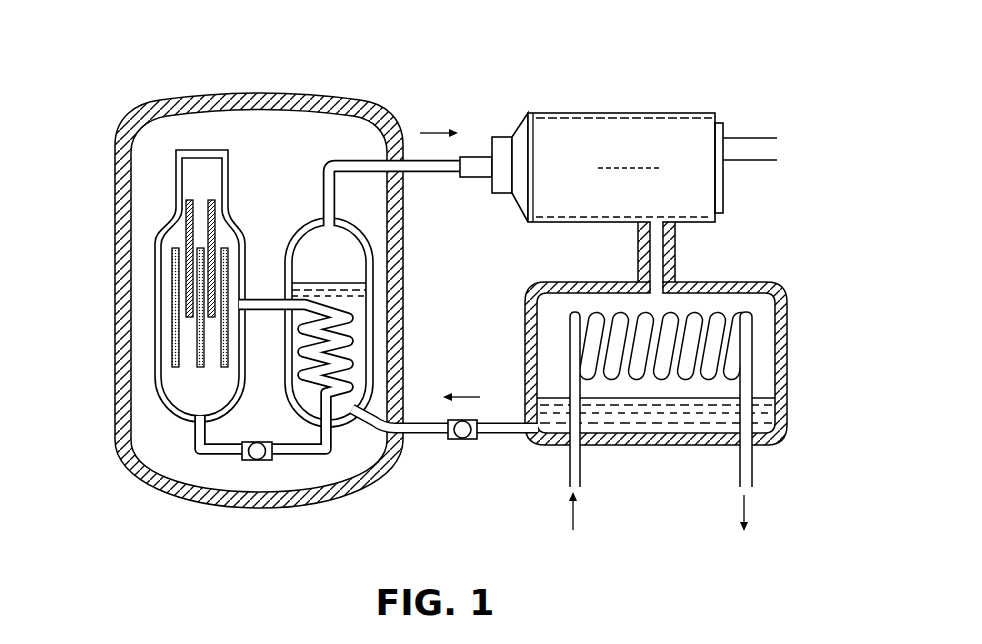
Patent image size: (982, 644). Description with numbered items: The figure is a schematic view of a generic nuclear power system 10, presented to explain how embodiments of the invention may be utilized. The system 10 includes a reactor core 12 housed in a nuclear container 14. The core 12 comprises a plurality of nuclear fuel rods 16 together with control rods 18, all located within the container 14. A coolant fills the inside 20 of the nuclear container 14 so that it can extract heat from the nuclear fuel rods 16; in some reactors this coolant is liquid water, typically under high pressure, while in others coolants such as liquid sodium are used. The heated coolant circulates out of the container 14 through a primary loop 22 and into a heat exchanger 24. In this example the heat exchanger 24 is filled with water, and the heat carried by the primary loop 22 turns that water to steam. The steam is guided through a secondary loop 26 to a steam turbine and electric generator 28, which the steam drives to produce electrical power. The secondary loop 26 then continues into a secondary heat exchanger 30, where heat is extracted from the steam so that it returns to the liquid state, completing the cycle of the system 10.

The nuclear power system 10 is at (439, 282).
The reactor core 12 is at (153, 285).
The nuclear container 14 is at (154, 319).
The nuclear fuel rods 16 is at (177, 293).
The control rods 18 is at (188, 245).
The inside of the nuclear container 20 is at (178, 397).
The primary loop 22 is at (301, 452).
The heat exchanger 24 is at (375, 316).
The secondary loop 26 is at (426, 173).
The steam turbine and electric generator 28 is at (632, 117).
The secondary heat exchanger 30 is at (781, 324).